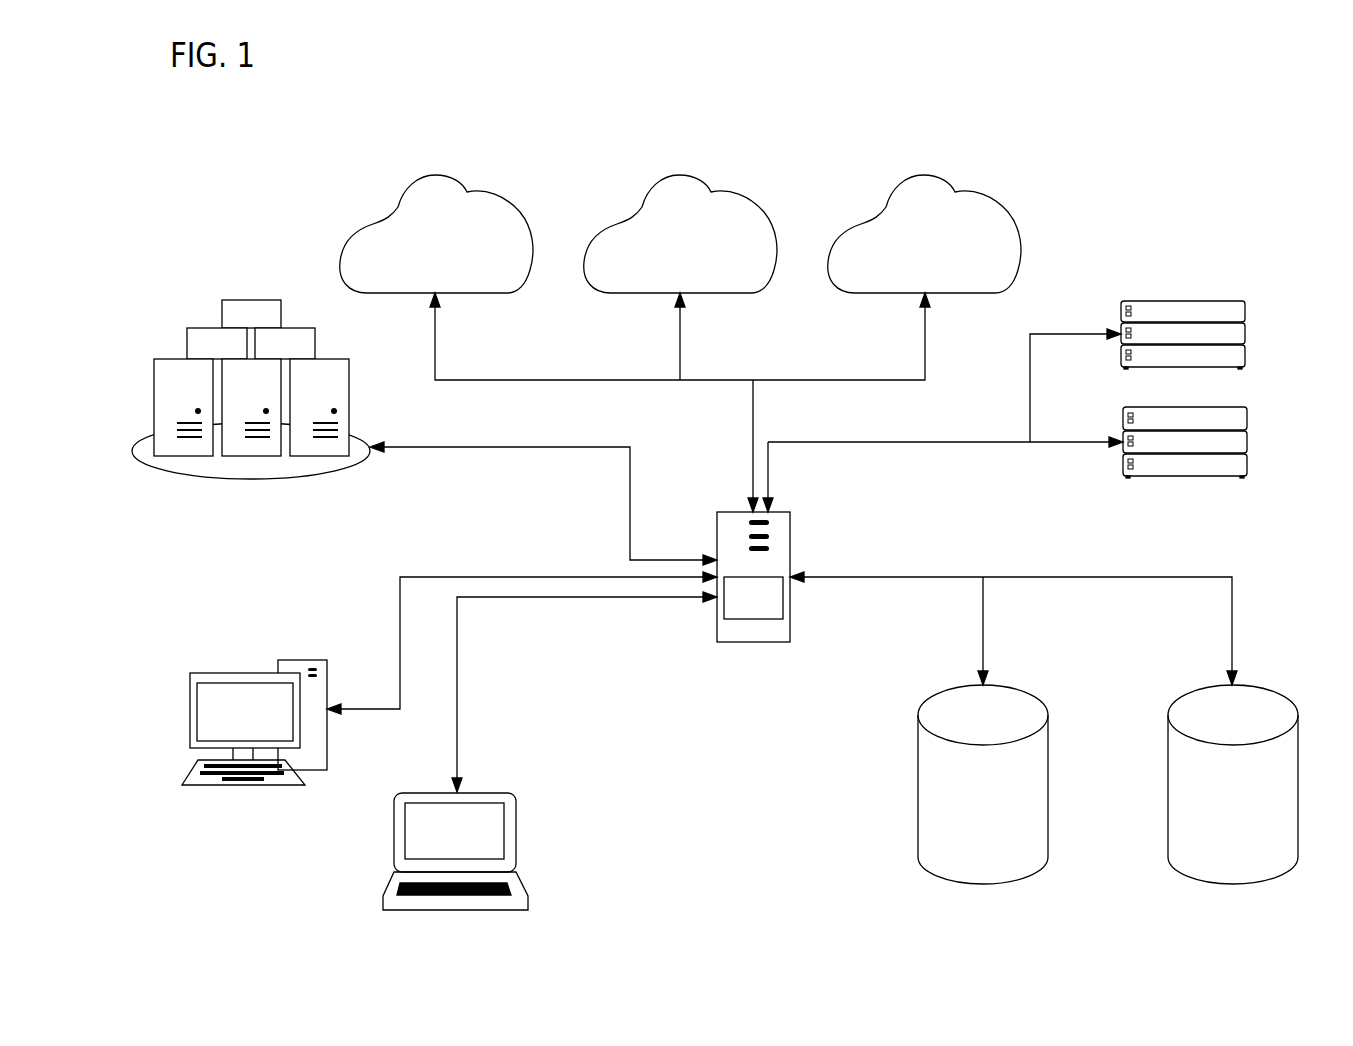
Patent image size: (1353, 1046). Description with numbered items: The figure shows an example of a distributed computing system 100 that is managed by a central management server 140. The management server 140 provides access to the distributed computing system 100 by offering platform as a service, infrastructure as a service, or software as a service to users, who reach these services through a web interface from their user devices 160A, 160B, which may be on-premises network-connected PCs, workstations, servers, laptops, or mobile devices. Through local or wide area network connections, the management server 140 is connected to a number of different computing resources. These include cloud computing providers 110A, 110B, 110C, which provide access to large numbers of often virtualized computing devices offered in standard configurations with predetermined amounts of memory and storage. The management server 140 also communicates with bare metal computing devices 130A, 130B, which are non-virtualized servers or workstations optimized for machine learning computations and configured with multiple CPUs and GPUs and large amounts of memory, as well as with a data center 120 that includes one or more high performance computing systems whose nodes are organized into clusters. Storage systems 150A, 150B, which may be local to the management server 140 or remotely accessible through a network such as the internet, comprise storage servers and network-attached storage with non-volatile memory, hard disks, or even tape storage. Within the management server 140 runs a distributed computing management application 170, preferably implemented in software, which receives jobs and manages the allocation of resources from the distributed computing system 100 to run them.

The distributed computing system 100 is at (1172, 72).
The cloud computing provider 110A is at (465, 182).
The cloud computing provider 110B is at (709, 182).
The cloud computing provider 110C is at (953, 182).
The data center 120 is at (278, 480).
The bare metal computing device 130A is at (1246, 302).
The bare metal computing device 130B is at (1248, 408).
The management server 140 is at (721, 600).
The storage system 150A is at (922, 862).
The storage system 150B is at (1248, 884).
The user device 160A is at (212, 788).
The user device 160B is at (388, 913).
The distributed computing management application 170 is at (753, 598).